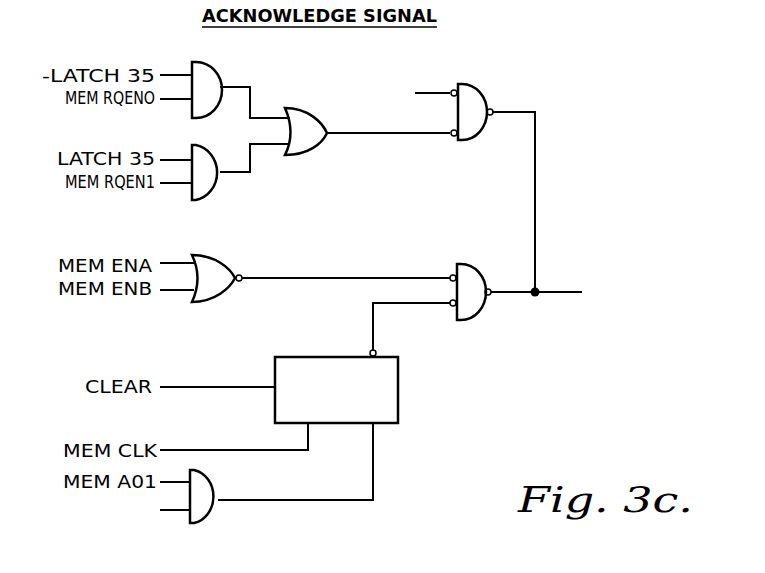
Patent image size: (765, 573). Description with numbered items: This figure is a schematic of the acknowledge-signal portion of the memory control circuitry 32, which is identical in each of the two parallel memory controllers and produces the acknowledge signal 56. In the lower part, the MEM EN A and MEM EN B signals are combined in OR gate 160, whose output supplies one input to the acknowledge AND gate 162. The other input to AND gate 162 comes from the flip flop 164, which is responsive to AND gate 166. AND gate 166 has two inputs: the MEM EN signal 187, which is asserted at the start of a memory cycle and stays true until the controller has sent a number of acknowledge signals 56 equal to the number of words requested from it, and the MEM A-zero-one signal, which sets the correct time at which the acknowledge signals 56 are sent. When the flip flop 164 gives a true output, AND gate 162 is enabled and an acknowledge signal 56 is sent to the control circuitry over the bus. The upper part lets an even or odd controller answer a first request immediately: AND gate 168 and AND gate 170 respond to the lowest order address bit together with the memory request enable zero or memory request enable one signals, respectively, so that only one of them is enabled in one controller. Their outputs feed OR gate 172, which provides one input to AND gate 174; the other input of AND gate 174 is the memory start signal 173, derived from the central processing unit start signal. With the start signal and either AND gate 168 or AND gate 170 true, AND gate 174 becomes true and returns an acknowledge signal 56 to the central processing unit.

The AND gate 168 is at (217, 65).
The AND gate 170 is at (216, 187).
The OR gate 172 is at (316, 146).
The memory start signal 173 is at (417, 93).
The AND gate 174 is at (470, 86).
The OR gate 160 is at (225, 262).
The acknowledge AND gate 162 is at (476, 273).
The flip flop 164 is at (399, 396).
The AND gate 166 is at (216, 511).
The MEM EN signal 187 is at (172, 510).
The acknowledge signal 56 is at (574, 293).
The memory control circuitry 32 is at (408, 502).